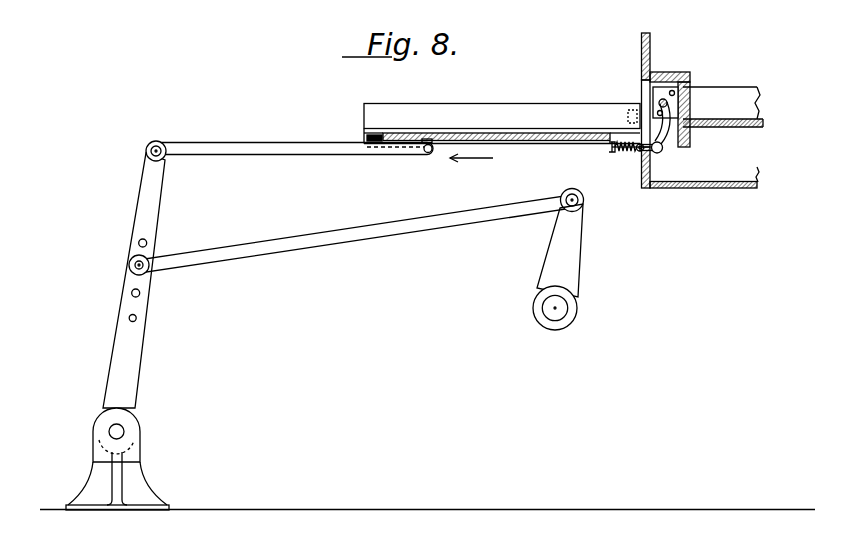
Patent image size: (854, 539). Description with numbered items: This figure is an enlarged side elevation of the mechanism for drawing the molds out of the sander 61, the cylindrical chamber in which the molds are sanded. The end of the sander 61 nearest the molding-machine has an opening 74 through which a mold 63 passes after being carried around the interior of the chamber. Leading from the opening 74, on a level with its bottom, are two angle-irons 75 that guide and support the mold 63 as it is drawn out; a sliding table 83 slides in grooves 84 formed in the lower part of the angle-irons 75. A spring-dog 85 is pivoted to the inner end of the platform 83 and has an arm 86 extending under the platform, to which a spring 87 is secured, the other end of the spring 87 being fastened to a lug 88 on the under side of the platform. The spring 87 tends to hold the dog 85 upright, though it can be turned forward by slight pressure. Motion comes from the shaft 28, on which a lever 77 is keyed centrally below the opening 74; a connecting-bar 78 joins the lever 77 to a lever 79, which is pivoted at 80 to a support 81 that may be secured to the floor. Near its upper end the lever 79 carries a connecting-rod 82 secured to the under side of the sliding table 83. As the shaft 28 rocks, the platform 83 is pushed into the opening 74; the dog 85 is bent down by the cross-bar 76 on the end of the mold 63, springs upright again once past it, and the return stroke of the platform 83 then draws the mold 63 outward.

The sander 61 is at (650, 43).
The opening 74 is at (685, 72).
The mold 63 is at (743, 123).
The angle-irons 75 is at (475, 99).
The sliding table 83 is at (537, 141).
The grooves 84 is at (367, 139).
The lug 88 is at (607, 150).
The spring 87 is at (622, 151).
The arm 86 is at (638, 151).
The spring-dog 85 is at (668, 148).
The cross-bar 76 is at (660, 101).
The connecting-rod 82 is at (305, 153).
The lever 79 is at (153, 208).
The connecting-bar 78 is at (383, 233).
The lever 77 is at (567, 273).
The shaft 28 is at (557, 317).
The pivot 80 is at (121, 431).
The support 81 is at (133, 480).